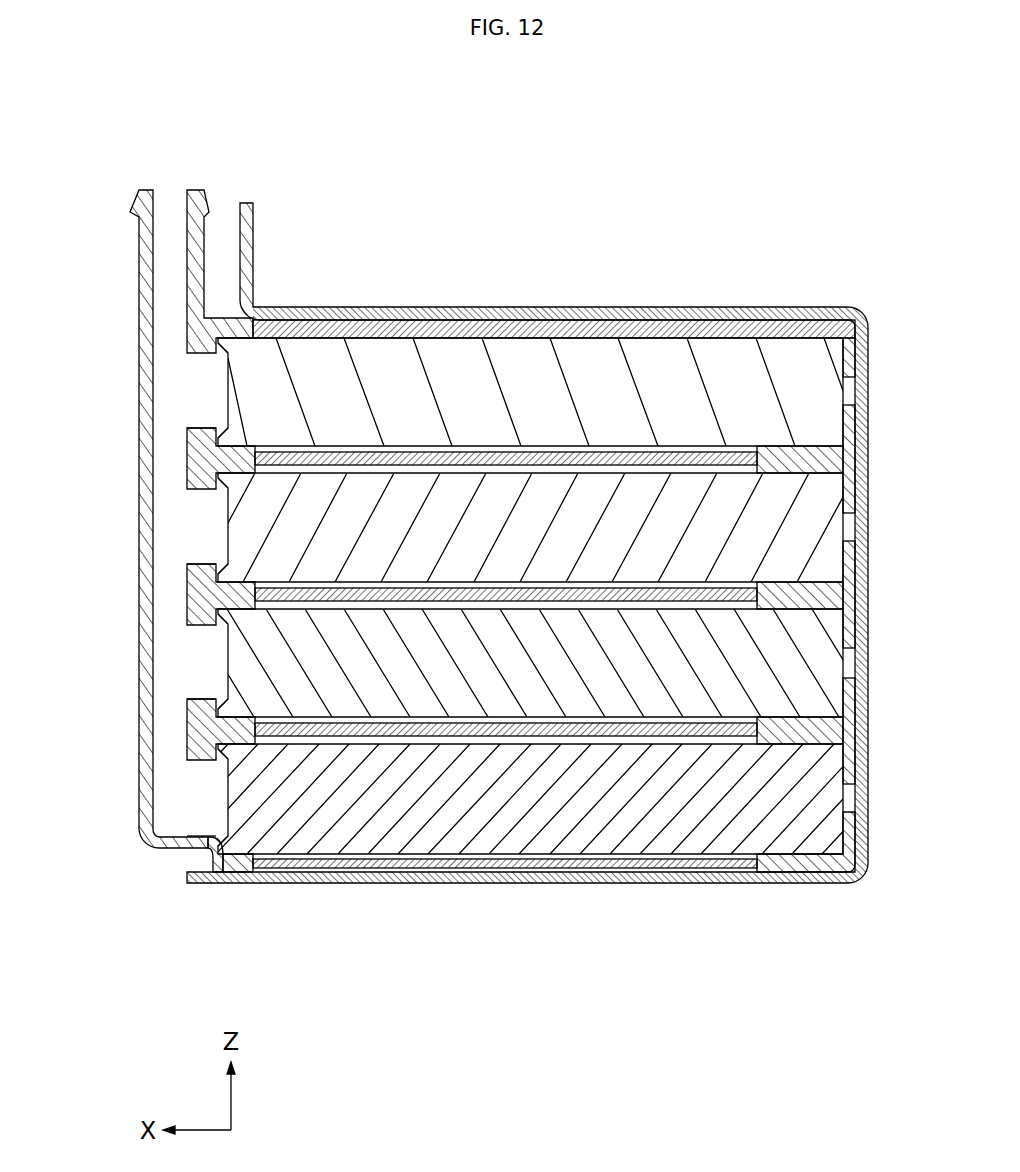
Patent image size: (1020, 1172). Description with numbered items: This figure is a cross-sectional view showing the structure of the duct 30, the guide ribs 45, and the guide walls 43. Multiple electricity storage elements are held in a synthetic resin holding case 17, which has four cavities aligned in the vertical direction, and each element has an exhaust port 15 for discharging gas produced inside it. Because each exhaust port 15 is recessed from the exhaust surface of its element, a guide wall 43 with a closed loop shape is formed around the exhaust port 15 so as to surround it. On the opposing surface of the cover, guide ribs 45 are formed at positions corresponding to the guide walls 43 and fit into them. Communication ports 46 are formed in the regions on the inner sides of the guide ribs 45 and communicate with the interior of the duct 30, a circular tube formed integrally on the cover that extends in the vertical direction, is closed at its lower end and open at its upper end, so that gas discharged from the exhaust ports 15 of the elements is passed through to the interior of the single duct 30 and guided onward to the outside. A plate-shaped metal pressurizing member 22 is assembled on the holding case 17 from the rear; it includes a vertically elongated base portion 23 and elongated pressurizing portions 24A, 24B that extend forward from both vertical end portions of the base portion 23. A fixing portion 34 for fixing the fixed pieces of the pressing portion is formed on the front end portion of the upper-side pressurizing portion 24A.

The exhaust port 15 is at (227, 402).
The holding case 17 is at (848, 734).
The pressurizing member 22 is at (561, 576).
The base portion 23 is at (858, 440).
The upper-side pressurizing portion 24A is at (554, 312).
The pressurizing portion 24B is at (597, 886).
The duct 30 is at (147, 268).
The fixing portion 34 is at (249, 242).
The guide wall 43 is at (203, 327).
The guide rib 45 is at (217, 355).
The communication port 46 is at (215, 432).